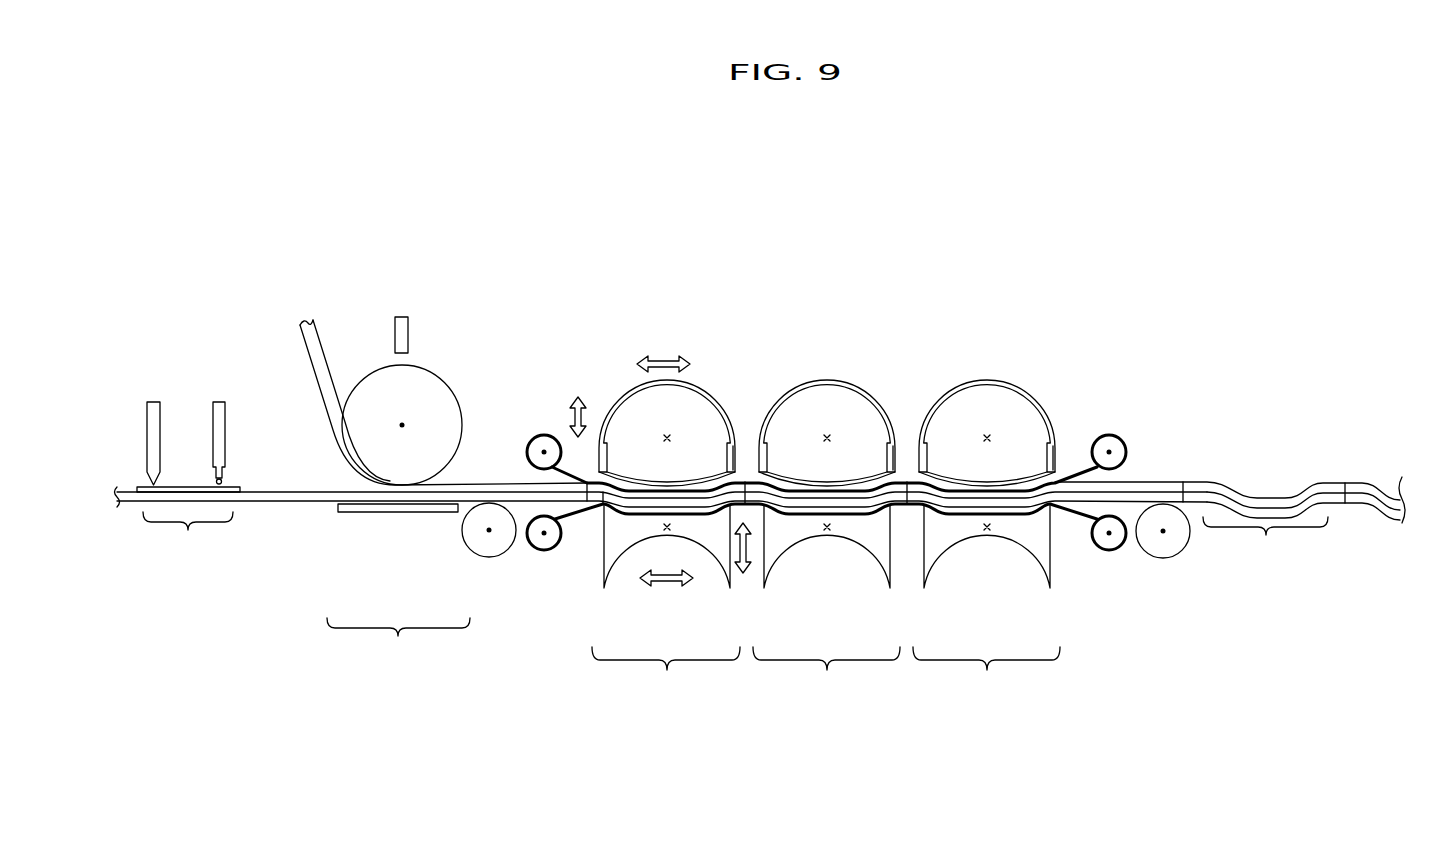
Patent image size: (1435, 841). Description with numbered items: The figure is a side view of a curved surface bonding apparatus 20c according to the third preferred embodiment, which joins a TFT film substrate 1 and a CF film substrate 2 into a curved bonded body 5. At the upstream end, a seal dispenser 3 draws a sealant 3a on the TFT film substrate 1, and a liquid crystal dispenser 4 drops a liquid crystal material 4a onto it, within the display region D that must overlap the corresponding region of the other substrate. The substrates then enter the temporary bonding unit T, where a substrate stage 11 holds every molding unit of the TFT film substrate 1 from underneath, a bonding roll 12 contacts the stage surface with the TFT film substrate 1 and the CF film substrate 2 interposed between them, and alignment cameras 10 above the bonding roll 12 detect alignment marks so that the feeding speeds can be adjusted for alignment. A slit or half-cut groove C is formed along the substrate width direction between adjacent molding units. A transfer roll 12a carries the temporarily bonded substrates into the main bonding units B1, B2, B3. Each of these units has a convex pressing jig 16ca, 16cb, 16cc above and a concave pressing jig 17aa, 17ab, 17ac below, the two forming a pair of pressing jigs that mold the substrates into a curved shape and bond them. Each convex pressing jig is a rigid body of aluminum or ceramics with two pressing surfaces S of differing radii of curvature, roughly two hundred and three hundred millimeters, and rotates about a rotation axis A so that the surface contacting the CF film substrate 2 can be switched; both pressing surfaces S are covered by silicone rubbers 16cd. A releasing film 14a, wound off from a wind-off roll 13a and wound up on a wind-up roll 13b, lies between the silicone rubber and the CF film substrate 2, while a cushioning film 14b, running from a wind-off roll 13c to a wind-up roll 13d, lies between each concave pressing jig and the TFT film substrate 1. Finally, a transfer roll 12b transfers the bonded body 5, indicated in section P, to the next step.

The TFT film substrate 1 is at (320, 492).
The CF film substrate 2 is at (314, 354).
The seal dispenser 3 is at (147, 428).
The sealant 3a is at (192, 489).
The liquid crystal dispenser 4 is at (226, 428).
The liquid crystal material 4a is at (224, 481).
The bonded body 5 is at (1408, 482).
The alignment camera 10 is at (408, 325).
The substrate stage 11 is at (389, 512).
The bonding roll 12 is at (437, 390).
The transfer roll 12a is at (486, 548).
The transfer roll 12b is at (1164, 550).
The wind-off roll 13a is at (532, 440).
The wind-up roll 13b is at (1109, 434).
The wind-off roll 13c is at (542, 550).
The wind-up roll 13d is at (1110, 550).
The releasing film 14a is at (568, 474).
The cushioning film 14b is at (571, 508).
The convex pressing jig 16ca is at (640, 410).
The convex pressing jig 16cb is at (800, 410).
The convex pressing jig 16cc is at (960, 410).
The silicone rubber 16cd is at (707, 483).
The concave pressing jig 17aa is at (625, 542).
The concave pressing jig 17ab is at (787, 542).
The concave pressing jig 17ac is at (945, 542).
The curved surface bonding apparatus 20c is at (594, 200).
The rotation axis A is at (670, 438).
The pressing surface S is at (612, 421).
The half-cut groove C is at (1072, 488).
The display region D is at (188, 538).
The temporary bonding unit T is at (398, 646).
The product section P is at (1265, 543).
The main bonding unit B1 is at (666, 675).
The main bonding unit B2 is at (826, 675).
The main bonding unit B3 is at (986, 675).